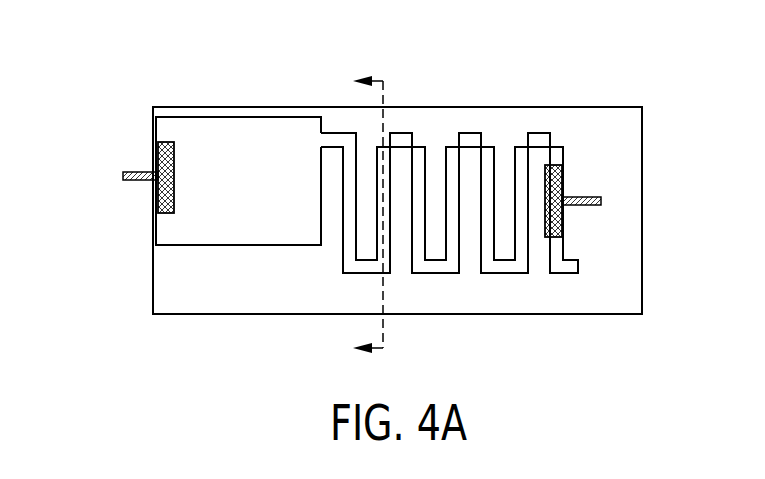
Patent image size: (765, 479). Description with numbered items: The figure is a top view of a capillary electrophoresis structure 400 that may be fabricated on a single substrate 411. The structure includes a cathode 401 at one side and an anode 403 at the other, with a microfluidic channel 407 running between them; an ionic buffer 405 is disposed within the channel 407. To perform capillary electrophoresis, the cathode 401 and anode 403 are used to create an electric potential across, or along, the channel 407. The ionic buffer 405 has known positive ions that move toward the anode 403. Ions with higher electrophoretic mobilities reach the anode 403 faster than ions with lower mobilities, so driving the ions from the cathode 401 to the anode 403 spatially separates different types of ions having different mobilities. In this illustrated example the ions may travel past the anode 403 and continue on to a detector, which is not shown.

The capillary electrophoresis structure 400 is at (180, 77).
The cathode 401 is at (155, 215).
The anode 403 is at (602, 201).
The ionic buffer 405 is at (258, 235).
The microfluidic channel 407 is at (487, 140).
The substrate 411 is at (328, 308).